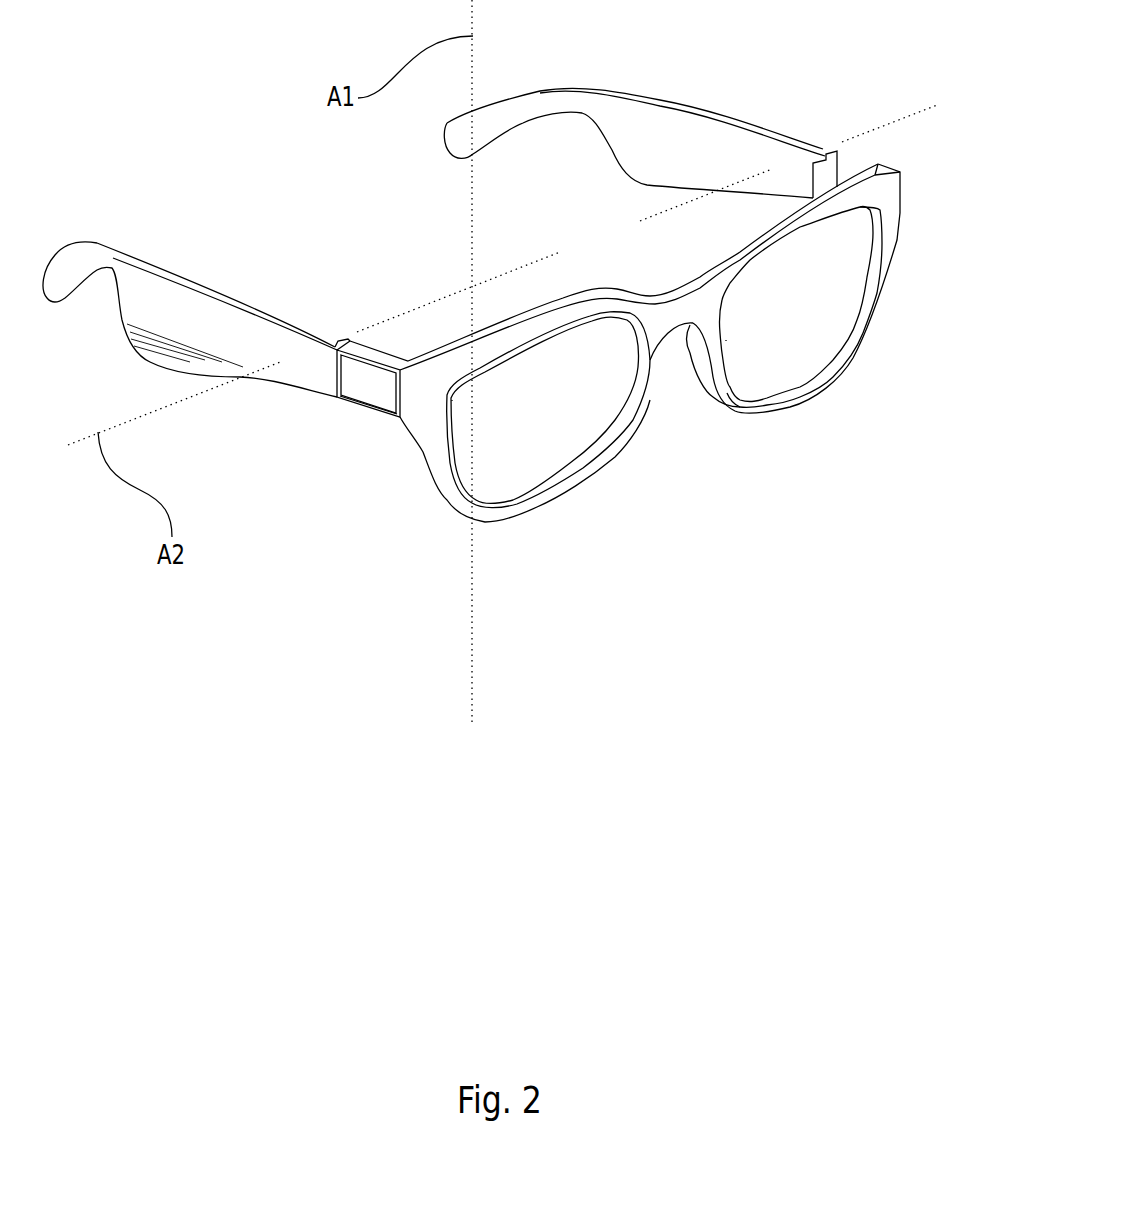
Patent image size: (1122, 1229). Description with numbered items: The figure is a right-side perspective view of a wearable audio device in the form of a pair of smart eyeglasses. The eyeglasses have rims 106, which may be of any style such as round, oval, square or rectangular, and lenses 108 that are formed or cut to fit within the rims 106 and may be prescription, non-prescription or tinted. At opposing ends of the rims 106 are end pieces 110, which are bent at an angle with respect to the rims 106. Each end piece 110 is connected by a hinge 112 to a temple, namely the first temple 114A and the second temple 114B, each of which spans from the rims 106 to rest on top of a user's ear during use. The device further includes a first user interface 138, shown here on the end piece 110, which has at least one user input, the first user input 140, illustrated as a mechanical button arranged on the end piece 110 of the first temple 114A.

The rims 106 is at (612, 462).
The lenses 108 is at (548, 427).
The end pieces 110 is at (378, 350).
The hinges 112 is at (357, 330).
The first temple 114A is at (276, 359).
The second temple 114B is at (707, 165).
The first user interface 138 is at (357, 414).
The first user input 140 is at (388, 398).